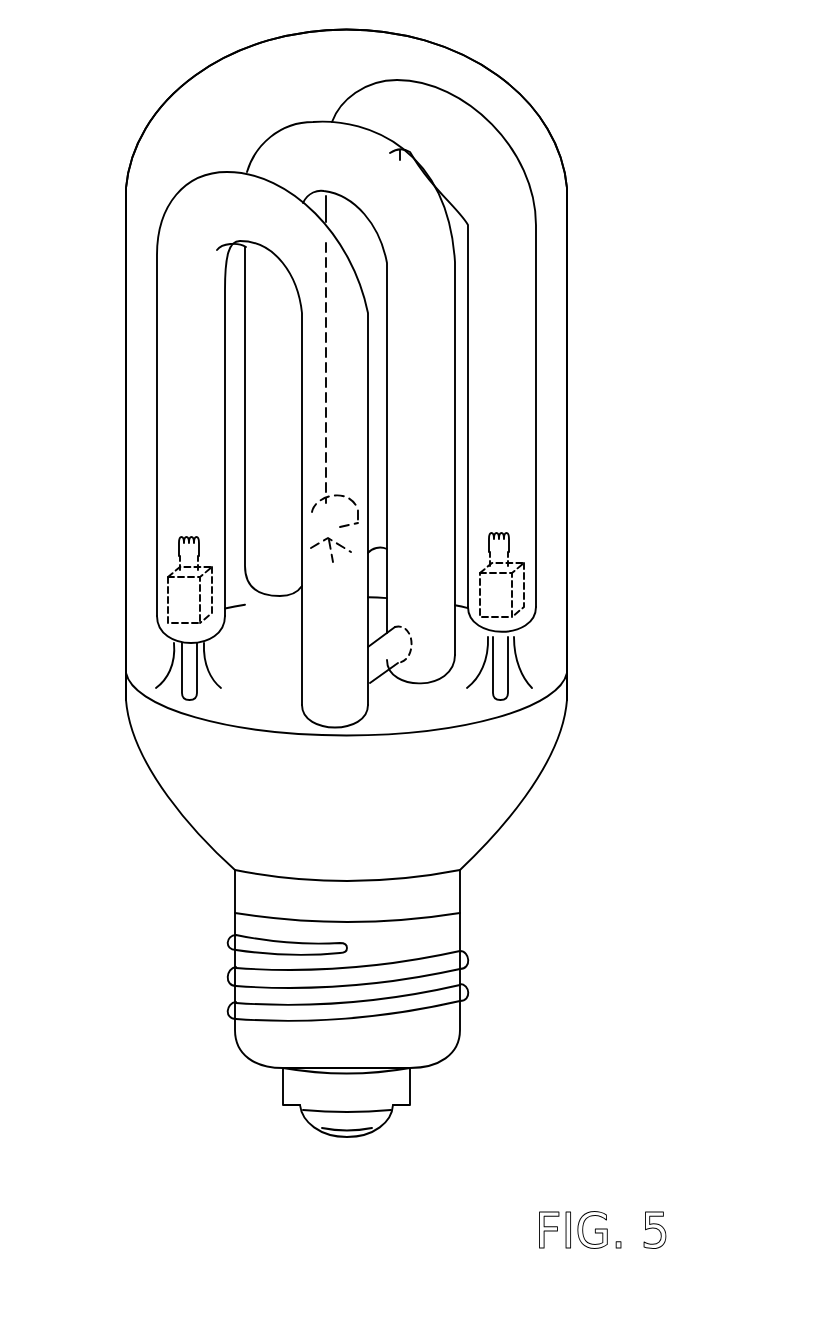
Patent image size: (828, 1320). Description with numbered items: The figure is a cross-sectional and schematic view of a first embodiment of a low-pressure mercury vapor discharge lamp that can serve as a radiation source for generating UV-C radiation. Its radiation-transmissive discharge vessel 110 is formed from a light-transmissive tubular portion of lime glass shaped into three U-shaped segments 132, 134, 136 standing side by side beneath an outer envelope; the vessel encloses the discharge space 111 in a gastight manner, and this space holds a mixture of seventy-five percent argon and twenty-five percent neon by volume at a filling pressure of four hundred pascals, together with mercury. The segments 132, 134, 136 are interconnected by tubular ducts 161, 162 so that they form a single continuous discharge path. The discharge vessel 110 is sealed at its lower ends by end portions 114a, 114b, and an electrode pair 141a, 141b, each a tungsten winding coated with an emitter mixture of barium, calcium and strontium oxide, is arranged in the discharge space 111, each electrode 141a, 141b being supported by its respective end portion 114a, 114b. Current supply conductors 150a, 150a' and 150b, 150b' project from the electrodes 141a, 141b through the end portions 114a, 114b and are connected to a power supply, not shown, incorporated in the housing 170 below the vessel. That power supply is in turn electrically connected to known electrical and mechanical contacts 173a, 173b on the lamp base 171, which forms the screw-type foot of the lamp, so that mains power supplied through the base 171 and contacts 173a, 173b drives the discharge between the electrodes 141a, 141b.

The discharge vessel 110 is at (462, 91).
The discharge space 111 is at (175, 403).
The U-shaped segment 132 is at (232, 182).
The U-shaped segment 134 is at (288, 136).
The U-shaped segment 136 is at (373, 96).
The end portion 114a is at (175, 648).
The end portion 114b is at (542, 600).
The electrode 141a is at (191, 540).
The electrode 141b is at (503, 534).
The current supply conductor 150a is at (116, 671).
The current supply conductor 150a' is at (251, 665).
The current supply conductor 150b is at (465, 680).
The current supply conductor 150b' is at (580, 662).
The duct 161 is at (332, 568).
The duct 162 is at (377, 654).
The housing 170 is at (172, 807).
The lamp base 171 is at (207, 975).
The electrical and mechanical contact 173a is at (470, 958).
The electrical and mechanical contact 173b is at (347, 1140).